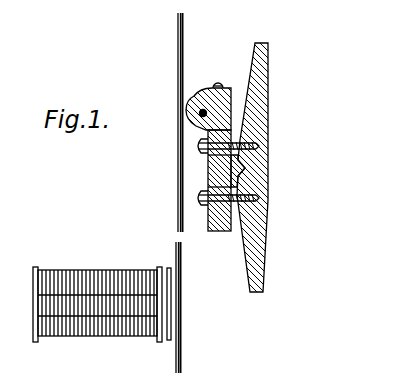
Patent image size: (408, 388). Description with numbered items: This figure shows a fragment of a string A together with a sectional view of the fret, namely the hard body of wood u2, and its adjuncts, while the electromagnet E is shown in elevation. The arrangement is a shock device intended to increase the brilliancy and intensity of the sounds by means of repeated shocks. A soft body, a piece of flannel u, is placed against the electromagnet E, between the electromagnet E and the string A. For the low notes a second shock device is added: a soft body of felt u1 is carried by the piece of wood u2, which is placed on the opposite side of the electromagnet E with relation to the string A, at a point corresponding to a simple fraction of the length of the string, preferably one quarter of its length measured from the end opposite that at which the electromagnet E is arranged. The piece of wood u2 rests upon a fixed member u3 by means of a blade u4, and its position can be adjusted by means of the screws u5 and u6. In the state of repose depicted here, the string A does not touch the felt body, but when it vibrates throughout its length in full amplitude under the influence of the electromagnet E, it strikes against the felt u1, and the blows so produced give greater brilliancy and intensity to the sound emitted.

The string A is at (177, 53).
The electromagnet E is at (90, 270).
The piece of flannel u is at (166, 335).
The soft body of felt u1 is at (198, 92).
The hard body of wood u2 is at (219, 84).
The fixed member u3 is at (268, 72).
The blade u4 is at (240, 165).
The screw u5 is at (198, 153).
The screw u6 is at (198, 205).